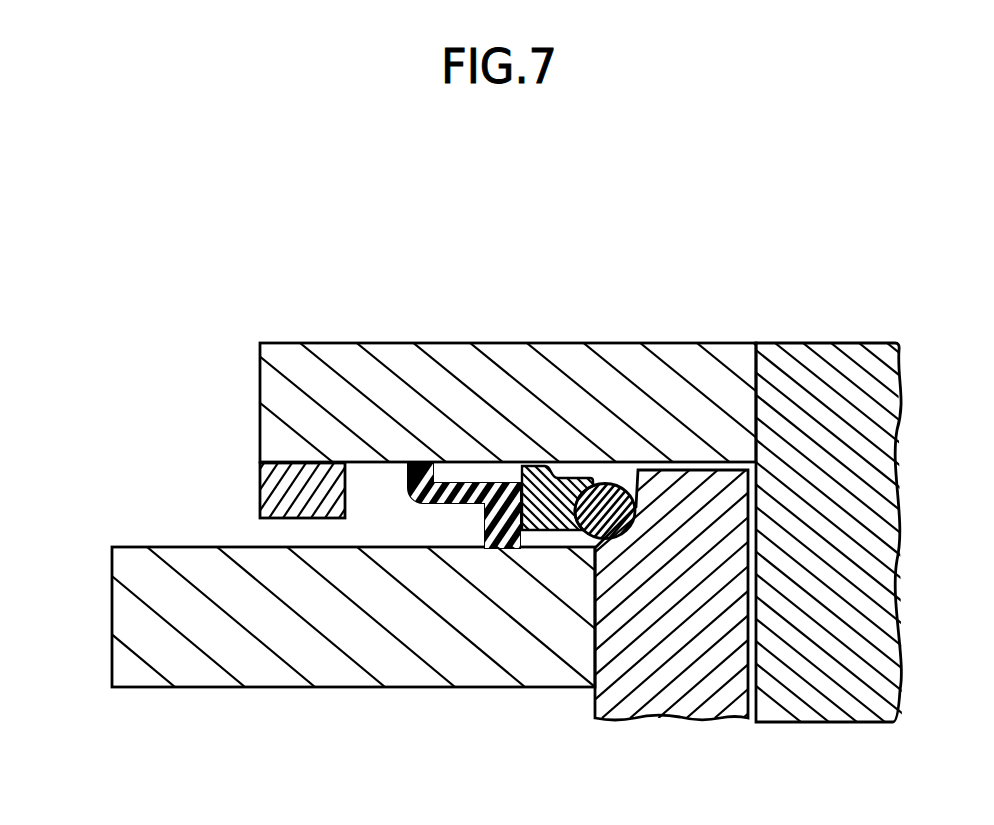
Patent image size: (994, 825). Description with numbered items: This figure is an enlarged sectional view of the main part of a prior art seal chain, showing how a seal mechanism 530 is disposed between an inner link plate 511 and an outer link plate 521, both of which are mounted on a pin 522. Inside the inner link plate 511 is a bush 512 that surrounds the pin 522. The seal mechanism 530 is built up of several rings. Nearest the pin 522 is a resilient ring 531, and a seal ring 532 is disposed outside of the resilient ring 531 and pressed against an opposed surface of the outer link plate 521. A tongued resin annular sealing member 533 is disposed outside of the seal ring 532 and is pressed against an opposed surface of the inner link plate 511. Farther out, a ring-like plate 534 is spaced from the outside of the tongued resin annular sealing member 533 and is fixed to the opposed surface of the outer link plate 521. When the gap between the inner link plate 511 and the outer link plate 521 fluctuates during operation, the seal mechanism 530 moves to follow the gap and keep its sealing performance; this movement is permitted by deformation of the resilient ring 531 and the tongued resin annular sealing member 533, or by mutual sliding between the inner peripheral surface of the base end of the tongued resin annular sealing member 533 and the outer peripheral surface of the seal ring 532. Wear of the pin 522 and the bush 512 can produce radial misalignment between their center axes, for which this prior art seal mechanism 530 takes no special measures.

The inner link plate 511 is at (128, 610).
The bush 512 is at (689, 698).
The outer link plate 521 is at (272, 404).
The pin 522 is at (820, 350).
The seal mechanism 530 is at (206, 459).
The resilient ring 531 is at (622, 486).
The seal ring 532 is at (545, 490).
The tongued resin annular sealing member 533 is at (500, 500).
The ring-like plate 534 is at (262, 492).